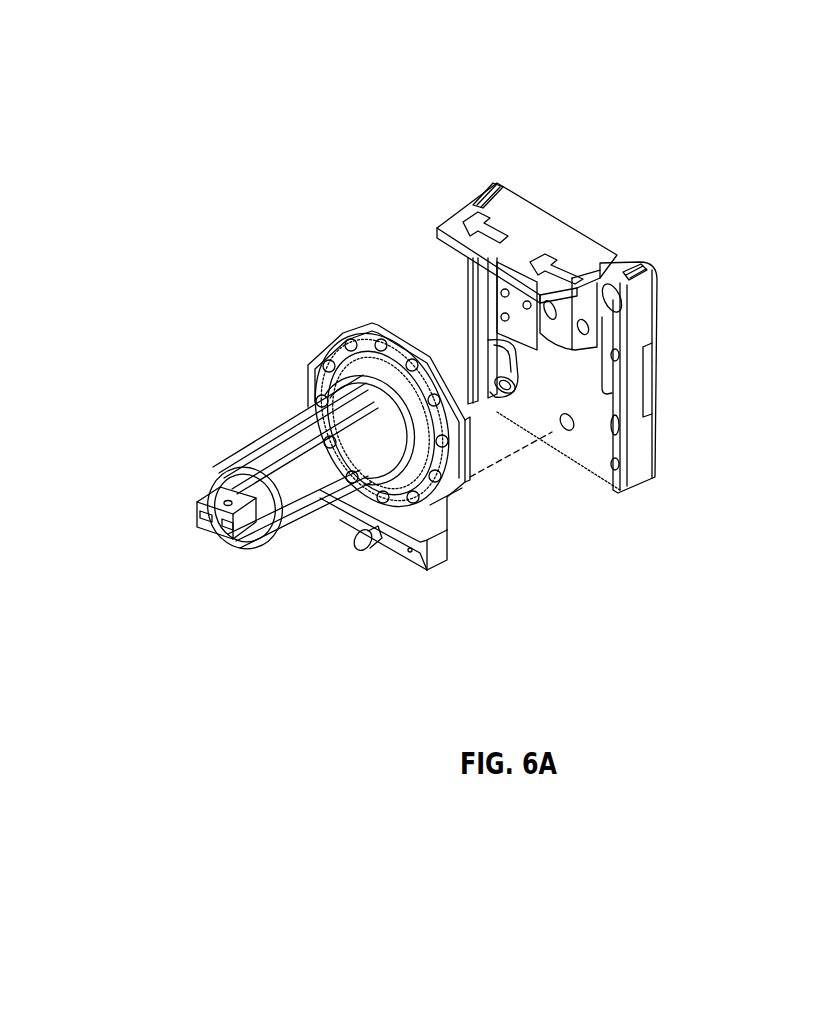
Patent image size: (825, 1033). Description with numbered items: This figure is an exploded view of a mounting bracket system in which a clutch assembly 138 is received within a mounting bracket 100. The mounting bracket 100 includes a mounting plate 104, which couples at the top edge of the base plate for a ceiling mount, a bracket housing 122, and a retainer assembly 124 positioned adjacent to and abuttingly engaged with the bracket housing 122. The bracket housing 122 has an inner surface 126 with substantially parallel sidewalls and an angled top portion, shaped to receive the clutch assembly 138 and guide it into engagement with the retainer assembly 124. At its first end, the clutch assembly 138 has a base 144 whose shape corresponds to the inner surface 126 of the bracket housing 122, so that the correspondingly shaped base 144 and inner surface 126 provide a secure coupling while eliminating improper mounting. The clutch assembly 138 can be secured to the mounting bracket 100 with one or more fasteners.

The mounting bracket 100 is at (549, 160).
The mounting plate 104 is at (466, 222).
The bracket housing 122 is at (630, 470).
The retainer assembly 124 is at (580, 350).
The inner surface 126 is at (488, 367).
The clutch assembly 138 is at (235, 402).
The base 144 is at (332, 341).